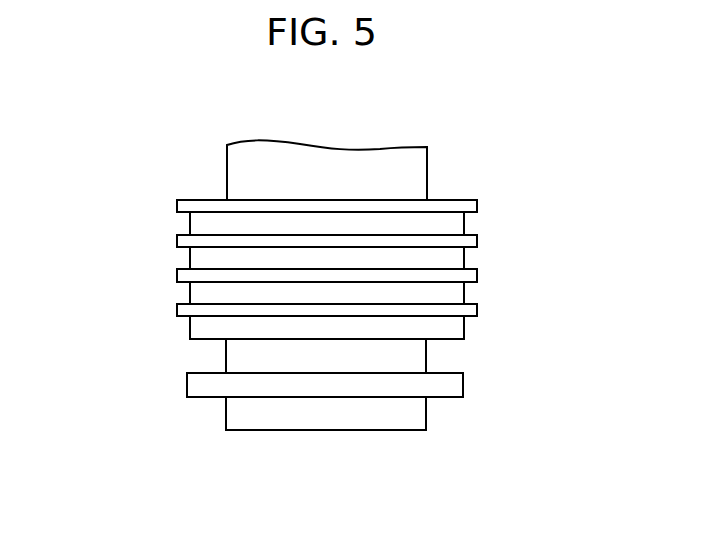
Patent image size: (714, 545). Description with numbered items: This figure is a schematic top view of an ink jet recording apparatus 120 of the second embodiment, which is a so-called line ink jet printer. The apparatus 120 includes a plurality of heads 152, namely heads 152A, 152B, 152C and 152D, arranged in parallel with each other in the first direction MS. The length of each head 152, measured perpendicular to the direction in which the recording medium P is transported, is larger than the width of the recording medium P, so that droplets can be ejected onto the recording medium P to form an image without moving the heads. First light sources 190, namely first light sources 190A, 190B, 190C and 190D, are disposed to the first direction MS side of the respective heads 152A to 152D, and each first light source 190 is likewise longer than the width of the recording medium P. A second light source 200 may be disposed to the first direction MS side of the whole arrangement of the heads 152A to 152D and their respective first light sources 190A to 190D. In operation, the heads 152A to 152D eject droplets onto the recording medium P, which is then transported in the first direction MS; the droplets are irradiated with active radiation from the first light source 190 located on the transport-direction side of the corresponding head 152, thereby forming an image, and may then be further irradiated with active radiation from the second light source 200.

The ink jet recording apparatus 120 is at (337, 234).
The heads 152 is at (420, 255).
The head 152A is at (388, 308).
The head 152B is at (494, 273).
The head 152C is at (494, 240).
The head 152D is at (494, 204).
The first light sources 190 is at (238, 278).
The first light source 190A is at (267, 330).
The first light source 190B is at (178, 295).
The first light source 190C is at (178, 260).
The first light source 190D is at (178, 225).
The second light source 200 is at (174, 385).
The recording medium P is at (410, 177).
The first direction MS is at (324, 452).